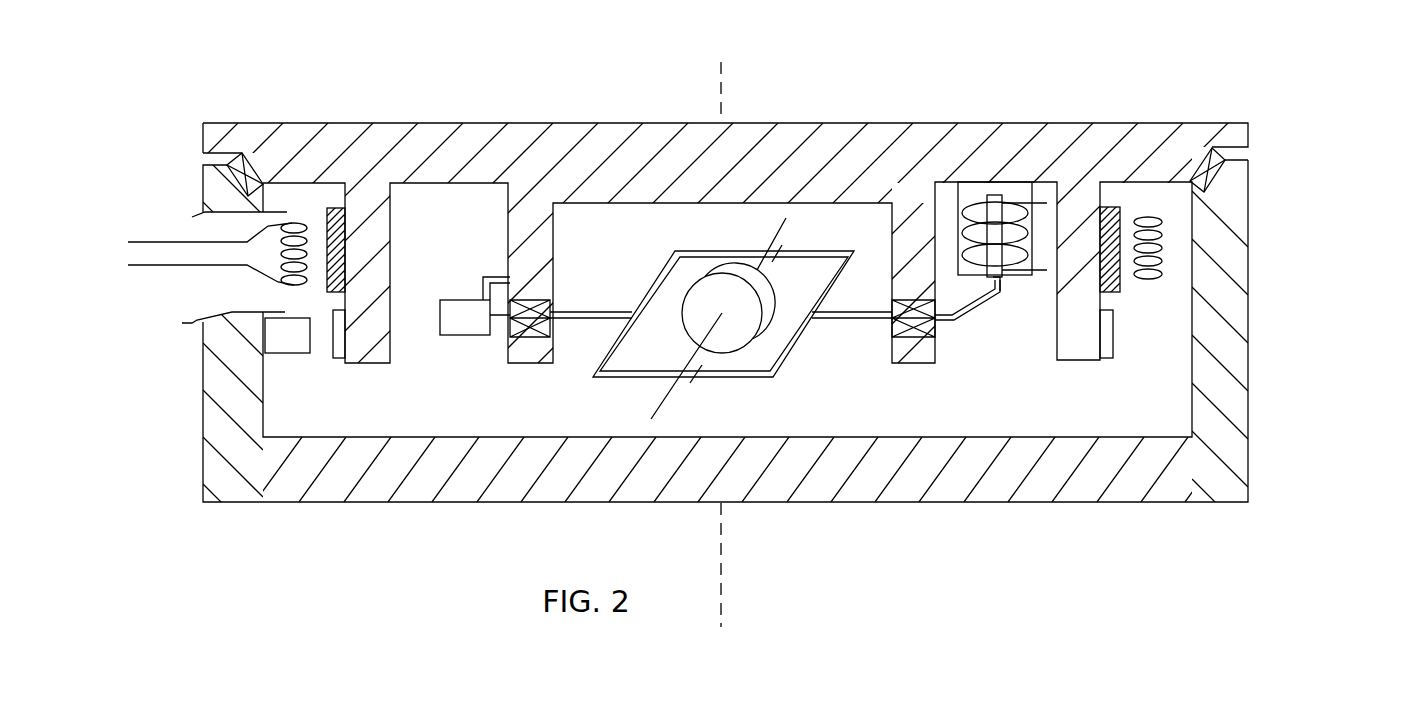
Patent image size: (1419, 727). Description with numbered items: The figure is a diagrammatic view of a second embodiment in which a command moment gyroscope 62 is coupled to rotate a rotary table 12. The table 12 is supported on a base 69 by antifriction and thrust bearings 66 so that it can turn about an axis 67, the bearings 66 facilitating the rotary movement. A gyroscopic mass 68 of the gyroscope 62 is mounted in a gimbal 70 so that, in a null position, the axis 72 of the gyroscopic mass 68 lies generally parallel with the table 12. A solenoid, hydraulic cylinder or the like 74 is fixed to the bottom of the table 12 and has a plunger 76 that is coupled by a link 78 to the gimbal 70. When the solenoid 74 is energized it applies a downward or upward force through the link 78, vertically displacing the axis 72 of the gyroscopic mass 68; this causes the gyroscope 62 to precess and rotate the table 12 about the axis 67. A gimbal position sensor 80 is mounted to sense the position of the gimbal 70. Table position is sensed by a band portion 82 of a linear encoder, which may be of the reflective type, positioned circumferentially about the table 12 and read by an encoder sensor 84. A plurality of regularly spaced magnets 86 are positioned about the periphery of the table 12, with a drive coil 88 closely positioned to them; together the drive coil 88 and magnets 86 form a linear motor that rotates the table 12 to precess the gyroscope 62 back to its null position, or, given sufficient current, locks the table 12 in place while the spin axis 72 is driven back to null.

The rotary table 12 is at (1020, 122).
The command moment gyroscope 62 is at (726, 320).
The antifriction and thrust bearings 66 is at (227, 156).
The axis 67 is at (715, 80).
The gyroscopic mass 68 is at (695, 285).
The base 69 is at (1250, 369).
The gimbal 70 is at (628, 377).
The axis of gyroscopic mass 72 is at (778, 242).
The solenoid 74 is at (1023, 312).
The plunger 76 is at (998, 292).
The link 78 is at (973, 302).
The gimbal position sensor 80 is at (457, 300).
The band portion of linear encoder 82 is at (340, 358).
The encoder sensor 84 is at (278, 353).
The magnets 86 is at (330, 205).
The drive coil 88 is at (230, 285).